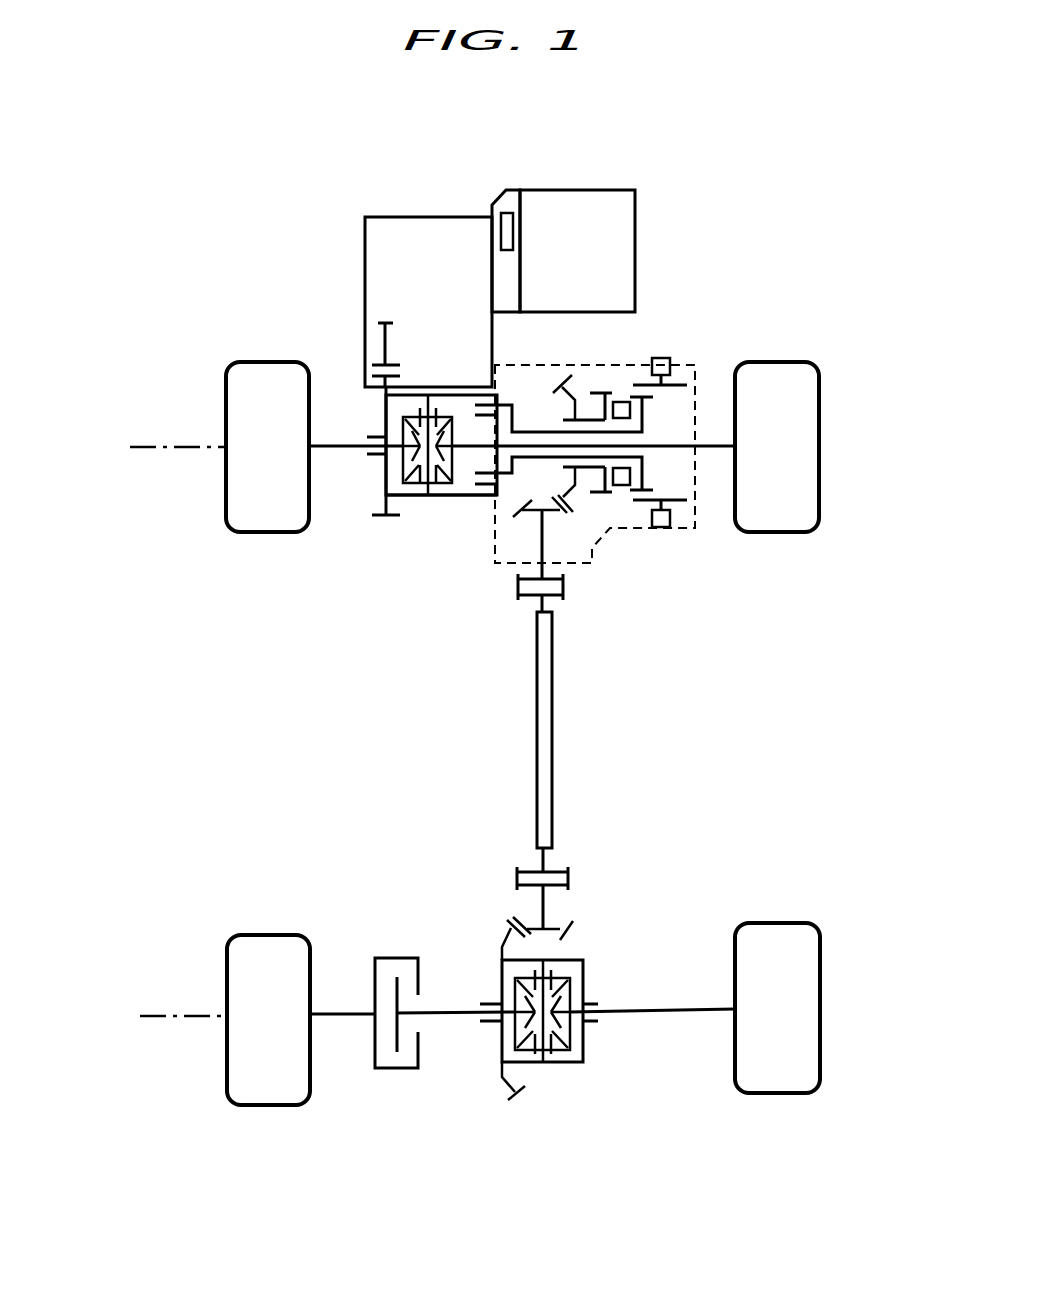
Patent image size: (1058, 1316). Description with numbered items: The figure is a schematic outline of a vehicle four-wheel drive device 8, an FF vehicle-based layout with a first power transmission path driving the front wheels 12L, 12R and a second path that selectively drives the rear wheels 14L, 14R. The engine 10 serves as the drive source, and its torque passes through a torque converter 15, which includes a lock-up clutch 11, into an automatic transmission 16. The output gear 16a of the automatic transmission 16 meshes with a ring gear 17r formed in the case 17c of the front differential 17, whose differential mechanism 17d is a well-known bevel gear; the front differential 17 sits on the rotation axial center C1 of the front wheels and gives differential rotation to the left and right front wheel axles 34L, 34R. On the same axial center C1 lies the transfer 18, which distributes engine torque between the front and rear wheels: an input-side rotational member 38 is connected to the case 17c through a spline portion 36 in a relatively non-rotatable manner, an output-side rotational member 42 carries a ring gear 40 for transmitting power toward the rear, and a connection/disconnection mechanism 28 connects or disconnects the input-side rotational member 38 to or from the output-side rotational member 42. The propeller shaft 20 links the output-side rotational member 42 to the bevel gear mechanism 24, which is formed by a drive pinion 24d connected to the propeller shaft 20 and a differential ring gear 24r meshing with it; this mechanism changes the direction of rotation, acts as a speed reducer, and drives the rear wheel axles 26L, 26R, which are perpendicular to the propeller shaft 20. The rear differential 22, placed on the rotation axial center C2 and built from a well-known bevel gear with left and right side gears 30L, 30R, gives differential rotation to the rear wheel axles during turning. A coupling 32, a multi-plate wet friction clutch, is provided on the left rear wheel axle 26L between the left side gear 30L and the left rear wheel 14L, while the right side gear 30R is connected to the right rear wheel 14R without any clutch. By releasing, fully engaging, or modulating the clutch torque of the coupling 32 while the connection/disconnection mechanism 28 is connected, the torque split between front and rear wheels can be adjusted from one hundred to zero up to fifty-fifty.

The vehicle four-wheel drive device 8 is at (755, 232).
The engine 10 is at (537, 215).
The lock-up clutch 11 is at (508, 212).
The left front wheel 12L is at (252, 400).
The right front wheel 12R is at (788, 397).
The left rear wheel 14L is at (247, 973).
The right rear wheel 14R is at (785, 950).
The torque converter 15 is at (500, 265).
The automatic transmission 16 is at (395, 227).
The output gear 16a is at (398, 369).
The front differential 17 is at (432, 540).
The case 17c is at (450, 497).
The differential mechanism 17d is at (383, 463).
The ring gear 17r is at (386, 516).
The transfer 18 is at (588, 540).
The propeller shaft 20 is at (546, 704).
The rear differential 22 is at (597, 1087).
The bevel gear mechanism 24 is at (497, 918).
The drive pinion 24d is at (575, 932).
The differential ring gear 24r is at (522, 1094).
The left rear wheel axle 26L is at (337, 1012).
The right rear wheel axle 26R is at (686, 1009).
The connection/disconnection mechanism 28 is at (623, 502).
The left side gear 30L is at (505, 1037).
The right side gear 30R is at (598, 992).
The coupling 32 is at (362, 1070).
The left front wheel axle 34L is at (335, 446).
The right front wheel axle 34R is at (705, 446).
The spline portion 36 is at (505, 494).
The input-side rotational member 38 is at (532, 430).
The ring gear 40 is at (562, 390).
The output-side rotational member 42 is at (585, 417).
The rotation axial center C1 is at (200, 452).
The rotation axial center C2 is at (207, 1018).